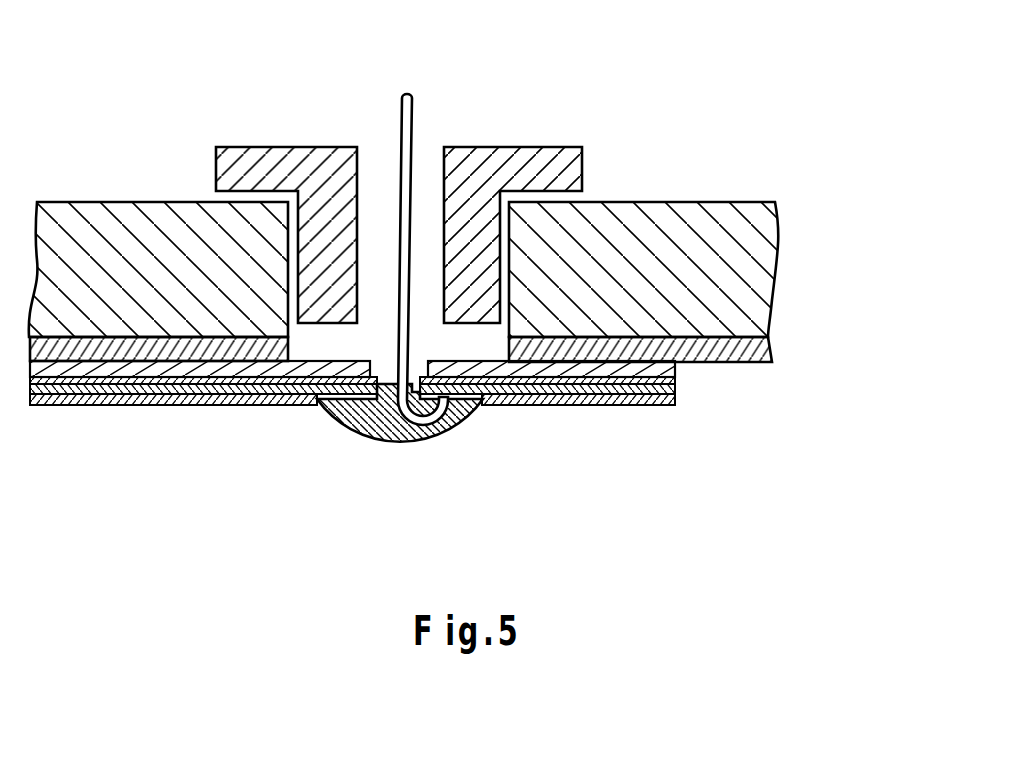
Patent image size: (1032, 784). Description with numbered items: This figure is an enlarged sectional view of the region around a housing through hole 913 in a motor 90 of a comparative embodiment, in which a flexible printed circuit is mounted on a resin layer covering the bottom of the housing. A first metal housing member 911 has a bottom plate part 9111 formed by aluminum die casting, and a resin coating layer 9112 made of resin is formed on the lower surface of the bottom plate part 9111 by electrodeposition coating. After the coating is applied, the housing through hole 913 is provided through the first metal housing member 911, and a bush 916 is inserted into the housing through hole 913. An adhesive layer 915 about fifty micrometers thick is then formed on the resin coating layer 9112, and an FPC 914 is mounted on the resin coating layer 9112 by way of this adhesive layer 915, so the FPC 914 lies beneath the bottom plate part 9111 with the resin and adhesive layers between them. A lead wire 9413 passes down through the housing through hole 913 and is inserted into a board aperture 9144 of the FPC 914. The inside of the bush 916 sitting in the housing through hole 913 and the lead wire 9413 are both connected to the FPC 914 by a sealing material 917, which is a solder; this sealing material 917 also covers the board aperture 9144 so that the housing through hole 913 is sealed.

The motor 90 is at (85, 70).
The first metal housing member 911 is at (479, 287).
The bottom plate part 9111 is at (732, 223).
The resin coating layer 9112 is at (732, 363).
The housing through hole 913 is at (371, 139).
The bush 916 is at (536, 134).
The lead wire 9413 is at (415, 112).
The FPC 914 is at (400, 448).
The adhesive layer 915 is at (563, 372).
The board aperture 9144 is at (384, 396).
The sealing material 917 is at (448, 428).